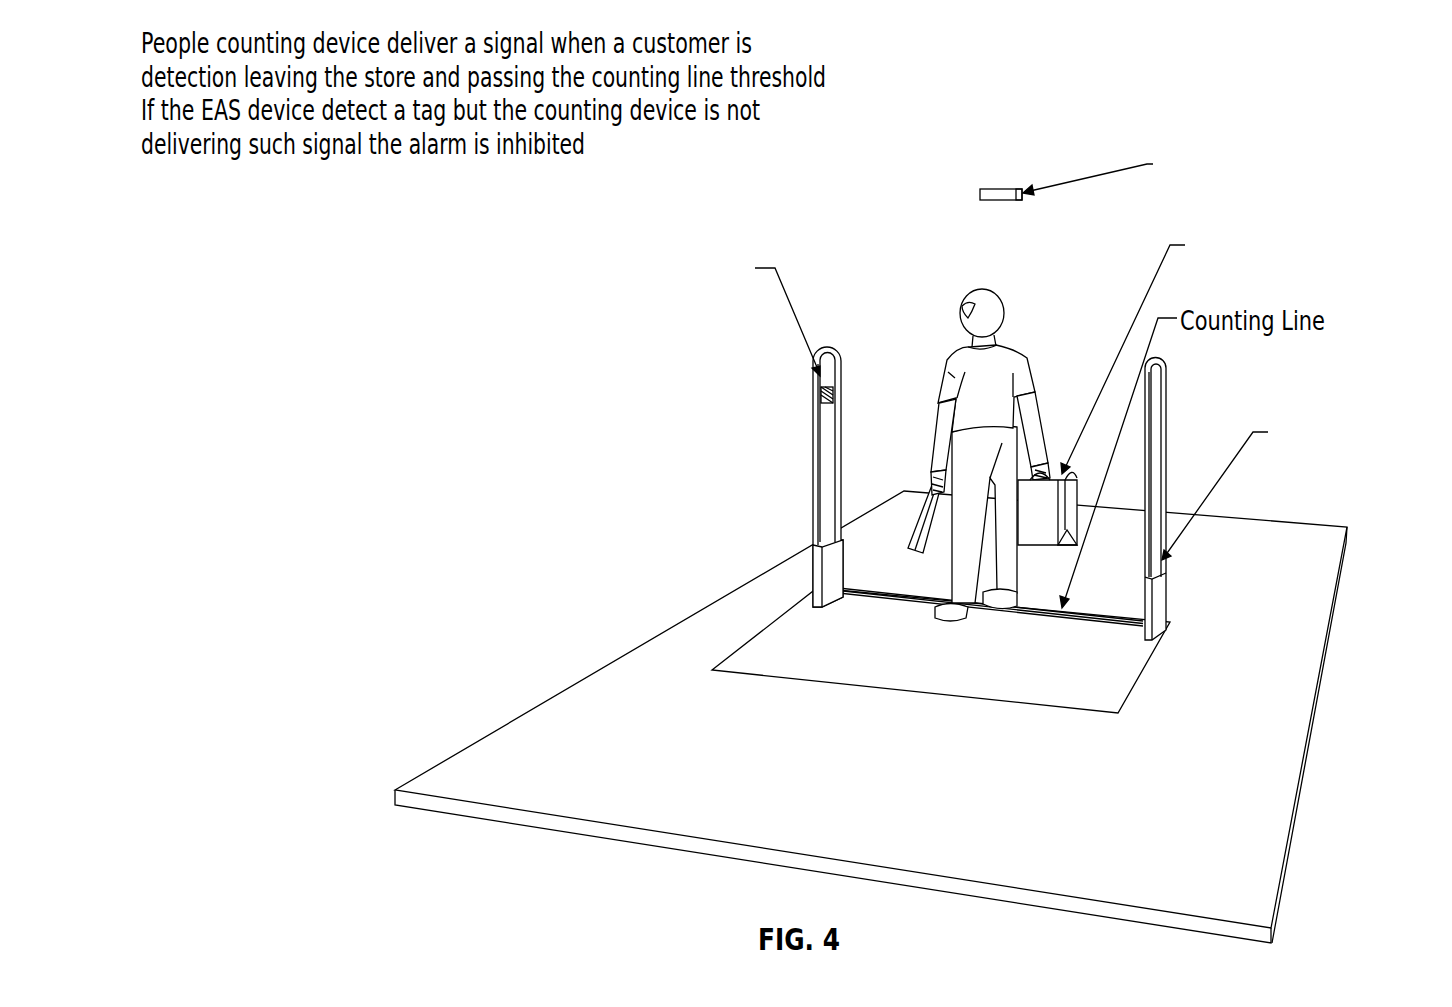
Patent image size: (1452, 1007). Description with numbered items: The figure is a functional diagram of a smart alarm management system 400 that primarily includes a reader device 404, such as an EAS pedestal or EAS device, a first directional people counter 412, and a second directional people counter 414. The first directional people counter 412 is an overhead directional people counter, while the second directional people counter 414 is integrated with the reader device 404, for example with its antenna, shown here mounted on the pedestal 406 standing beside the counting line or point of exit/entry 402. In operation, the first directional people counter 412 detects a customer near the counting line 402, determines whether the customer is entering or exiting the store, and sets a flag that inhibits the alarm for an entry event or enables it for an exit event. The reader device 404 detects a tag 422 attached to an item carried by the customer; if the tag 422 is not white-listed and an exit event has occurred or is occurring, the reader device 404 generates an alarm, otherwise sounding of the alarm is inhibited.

The smart alarm management system 400 is at (1088, 106).
The counting line or point of exit/entry 402 is at (1097, 617).
The reader device 404 is at (820, 562).
The integrated counting device pedestal 406 is at (656, 430).
The first directional people counter 412 is at (992, 190).
The second directional people counter 414 is at (816, 400).
The tag 422 is at (1067, 466).